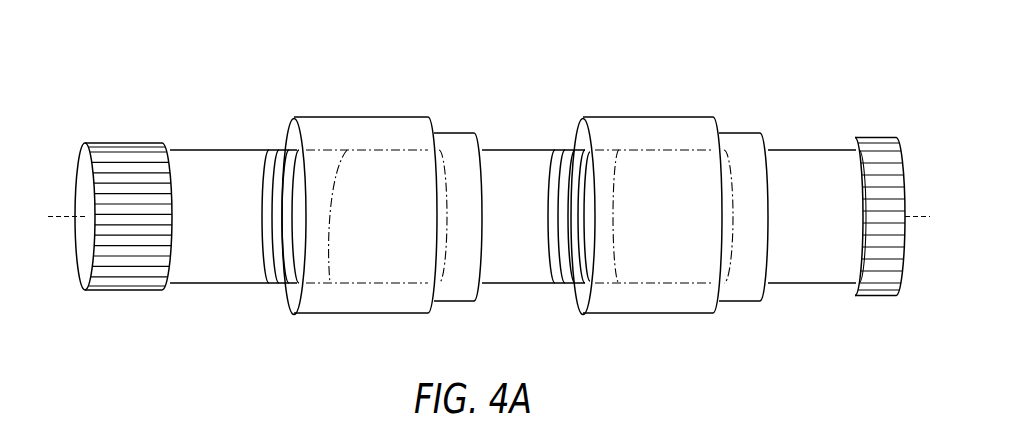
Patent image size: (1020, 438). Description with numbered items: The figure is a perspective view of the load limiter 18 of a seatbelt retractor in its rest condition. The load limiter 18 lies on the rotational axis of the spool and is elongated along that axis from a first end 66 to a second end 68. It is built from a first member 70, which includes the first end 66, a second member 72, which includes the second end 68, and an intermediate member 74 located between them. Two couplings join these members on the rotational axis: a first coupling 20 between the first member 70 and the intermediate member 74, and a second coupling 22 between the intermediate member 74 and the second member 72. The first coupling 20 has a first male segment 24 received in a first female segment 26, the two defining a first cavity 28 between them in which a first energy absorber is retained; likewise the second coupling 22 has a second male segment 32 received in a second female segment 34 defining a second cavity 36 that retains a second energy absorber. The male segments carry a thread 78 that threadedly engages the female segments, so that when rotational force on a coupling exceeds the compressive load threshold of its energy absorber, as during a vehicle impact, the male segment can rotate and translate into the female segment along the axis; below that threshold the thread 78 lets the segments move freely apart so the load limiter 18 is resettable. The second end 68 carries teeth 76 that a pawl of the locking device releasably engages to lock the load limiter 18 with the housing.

The load limiter 18 is at (727, 68).
The first coupling 20 is at (384, 110).
The second coupling 22 is at (681, 110).
The first male segment 24 is at (274, 285).
The first female segment 26 is at (434, 252).
The first cavity 28 is at (347, 150).
The second male segment 32 is at (555, 153).
The second female segment 34 is at (723, 248).
The second cavity 36 is at (652, 148).
The first end 66 is at (117, 125).
The second end 68 is at (873, 118).
The first member 70 is at (210, 165).
The second member 72 is at (805, 165).
The intermediate member 74 is at (507, 165).
The teeth 76 is at (117, 277).
The thread 78 is at (266, 152).